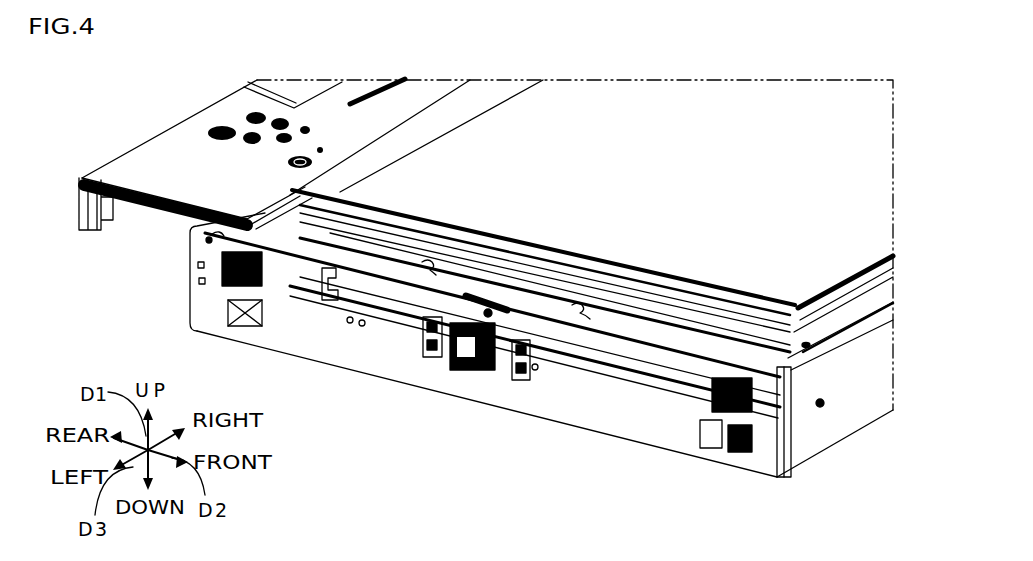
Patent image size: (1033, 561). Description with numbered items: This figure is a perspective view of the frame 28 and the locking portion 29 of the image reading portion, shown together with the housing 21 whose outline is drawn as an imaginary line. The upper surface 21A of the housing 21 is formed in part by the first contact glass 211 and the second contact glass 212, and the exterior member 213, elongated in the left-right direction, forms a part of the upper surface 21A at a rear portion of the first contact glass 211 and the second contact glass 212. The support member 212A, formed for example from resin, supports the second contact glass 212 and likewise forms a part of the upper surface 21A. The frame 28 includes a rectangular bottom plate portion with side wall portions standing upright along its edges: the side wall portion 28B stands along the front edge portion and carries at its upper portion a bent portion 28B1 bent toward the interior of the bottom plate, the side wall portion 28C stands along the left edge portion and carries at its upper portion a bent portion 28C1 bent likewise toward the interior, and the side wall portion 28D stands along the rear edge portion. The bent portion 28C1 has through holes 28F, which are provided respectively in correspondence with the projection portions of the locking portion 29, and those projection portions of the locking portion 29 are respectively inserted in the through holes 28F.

The housing 21 is at (114, 104).
The upper surface 21A is at (757, 146).
The first contact glass 211 is at (680, 175).
The second contact glass 212 is at (658, 312).
The support member 212A is at (585, 280).
The exterior member 213 is at (173, 152).
The frame 28 is at (332, 372).
The side wall portion 28B is at (822, 427).
The bent portion 28B1 is at (840, 320).
The side wall portion 28C is at (465, 380).
The bent portion 28C1 is at (372, 262).
The side wall portion 28D is at (190, 283).
The through holes 28F is at (427, 268).
The locking portion 29 is at (503, 260).